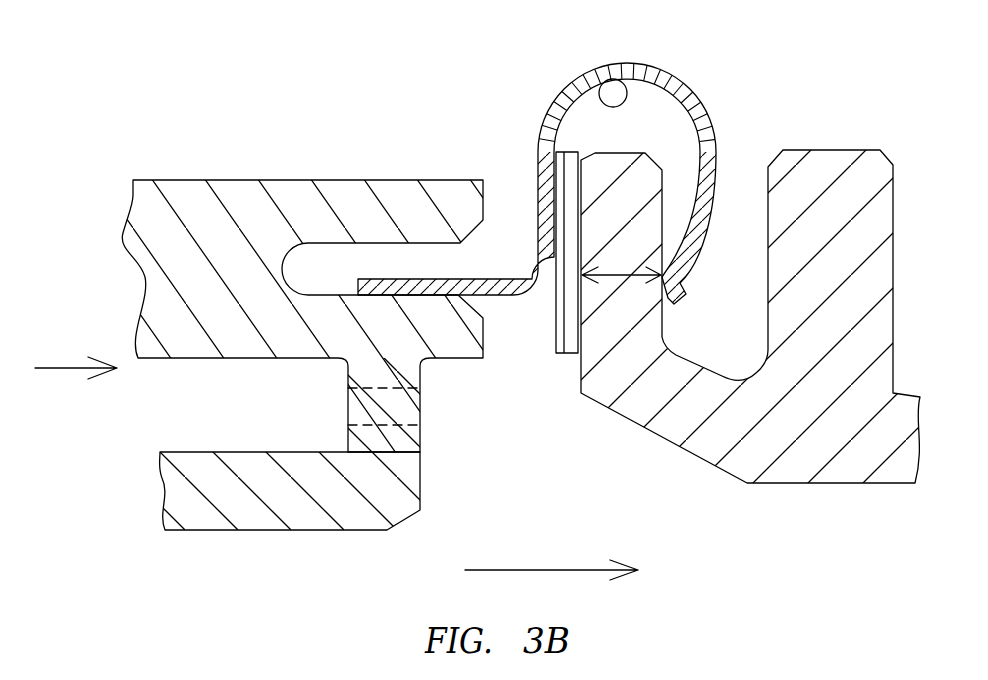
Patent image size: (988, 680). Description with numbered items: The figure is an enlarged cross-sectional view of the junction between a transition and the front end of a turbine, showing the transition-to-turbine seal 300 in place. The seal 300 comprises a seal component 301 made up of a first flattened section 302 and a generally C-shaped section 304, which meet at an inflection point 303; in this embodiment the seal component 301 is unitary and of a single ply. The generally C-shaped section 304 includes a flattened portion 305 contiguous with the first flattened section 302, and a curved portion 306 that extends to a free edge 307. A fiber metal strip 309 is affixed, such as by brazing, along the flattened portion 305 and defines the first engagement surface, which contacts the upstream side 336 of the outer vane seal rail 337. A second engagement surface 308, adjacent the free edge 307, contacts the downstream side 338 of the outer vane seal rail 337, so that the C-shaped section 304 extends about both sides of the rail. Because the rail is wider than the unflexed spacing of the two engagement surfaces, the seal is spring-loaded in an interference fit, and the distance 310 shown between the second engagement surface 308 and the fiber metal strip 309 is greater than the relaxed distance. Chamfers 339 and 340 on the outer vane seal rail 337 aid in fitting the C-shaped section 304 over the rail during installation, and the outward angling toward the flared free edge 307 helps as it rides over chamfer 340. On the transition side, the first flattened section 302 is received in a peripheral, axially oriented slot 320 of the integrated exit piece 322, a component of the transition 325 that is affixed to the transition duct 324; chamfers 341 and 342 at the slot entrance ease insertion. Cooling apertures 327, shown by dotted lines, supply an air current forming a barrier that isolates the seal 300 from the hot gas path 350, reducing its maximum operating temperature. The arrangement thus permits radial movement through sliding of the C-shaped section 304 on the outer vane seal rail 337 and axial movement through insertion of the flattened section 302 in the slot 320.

The transition-to-turbine seal 300 is at (542, 70).
The seal component 301 is at (573, 78).
The first flattened section 302 is at (405, 278).
The inflection point 303 is at (536, 290).
The generally C-shaped section 304 is at (598, 88).
The flattened portion 305 is at (537, 167).
The curved portion 306 is at (655, 73).
The free edge 307 is at (674, 304).
The second engagement surface 308 is at (617, 277).
The fiber metal strip 309 is at (570, 355).
The distance 310 is at (643, 270).
The slot 320 is at (310, 273).
The integrated exit piece 322 is at (192, 195).
The transition duct 324 is at (250, 530).
The transition 325 is at (63, 368).
The cooling apertures 327 is at (348, 403).
The upstream side 336 is at (576, 356).
The outer vane seal rail 337 is at (625, 202).
The downstream side 338 is at (660, 207).
The chamfer 339 is at (588, 150).
The chamfer 340 is at (632, 190).
The chamfer 341 is at (478, 240).
The chamfer 342 is at (502, 277).
The hot gas path 350 is at (548, 570).